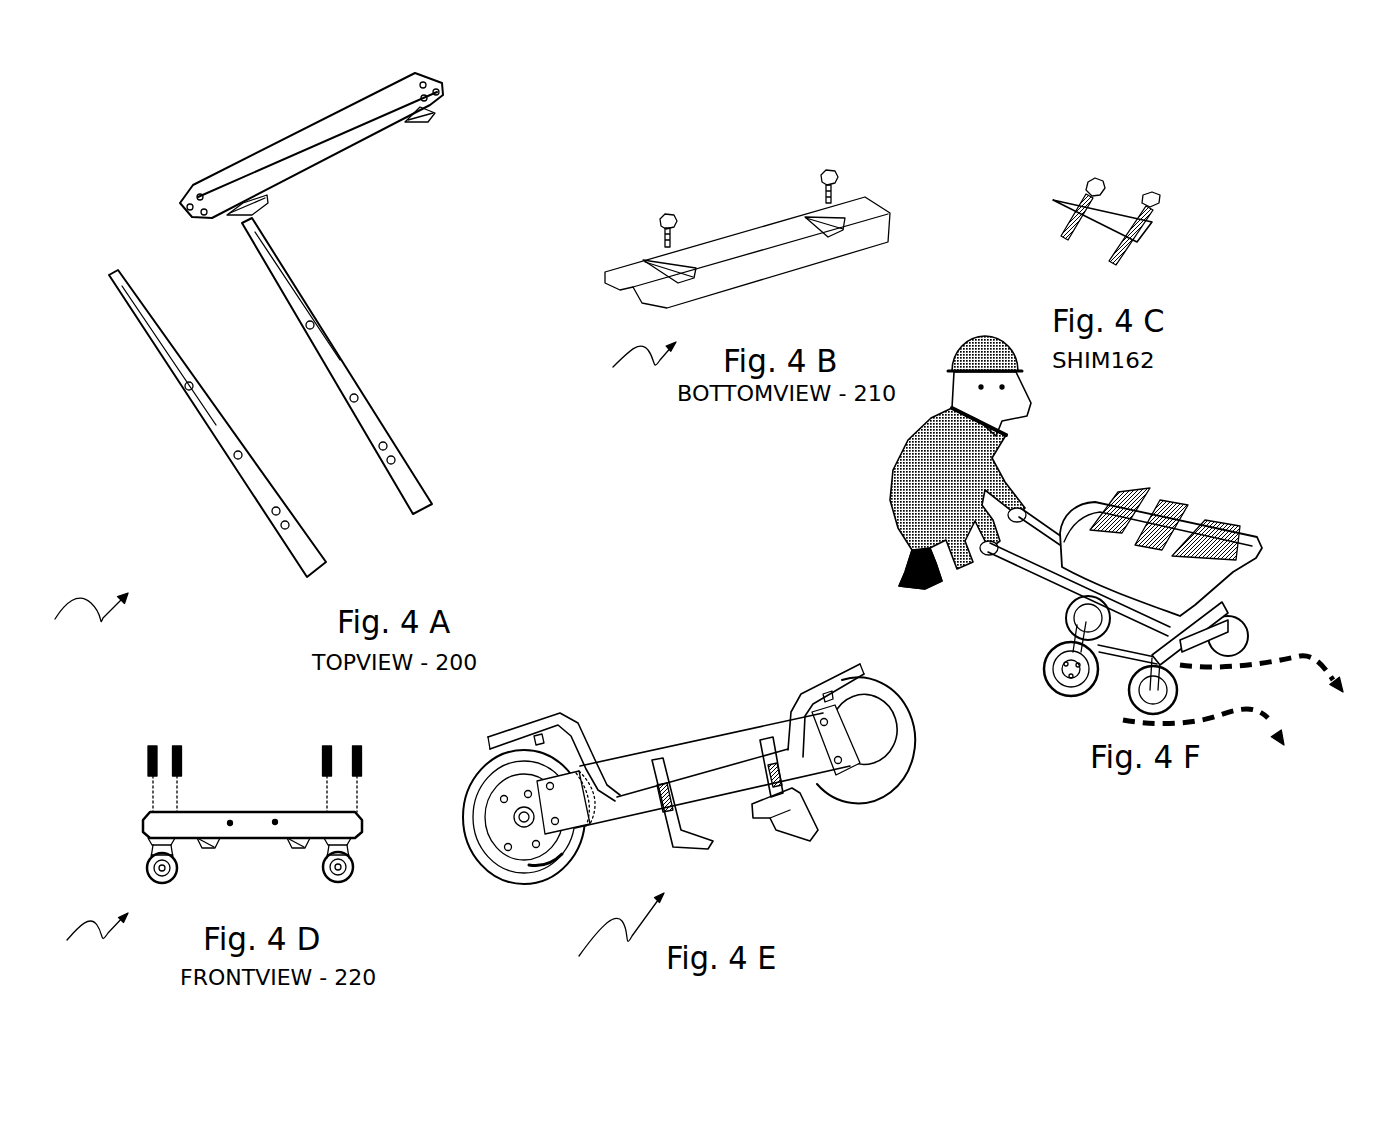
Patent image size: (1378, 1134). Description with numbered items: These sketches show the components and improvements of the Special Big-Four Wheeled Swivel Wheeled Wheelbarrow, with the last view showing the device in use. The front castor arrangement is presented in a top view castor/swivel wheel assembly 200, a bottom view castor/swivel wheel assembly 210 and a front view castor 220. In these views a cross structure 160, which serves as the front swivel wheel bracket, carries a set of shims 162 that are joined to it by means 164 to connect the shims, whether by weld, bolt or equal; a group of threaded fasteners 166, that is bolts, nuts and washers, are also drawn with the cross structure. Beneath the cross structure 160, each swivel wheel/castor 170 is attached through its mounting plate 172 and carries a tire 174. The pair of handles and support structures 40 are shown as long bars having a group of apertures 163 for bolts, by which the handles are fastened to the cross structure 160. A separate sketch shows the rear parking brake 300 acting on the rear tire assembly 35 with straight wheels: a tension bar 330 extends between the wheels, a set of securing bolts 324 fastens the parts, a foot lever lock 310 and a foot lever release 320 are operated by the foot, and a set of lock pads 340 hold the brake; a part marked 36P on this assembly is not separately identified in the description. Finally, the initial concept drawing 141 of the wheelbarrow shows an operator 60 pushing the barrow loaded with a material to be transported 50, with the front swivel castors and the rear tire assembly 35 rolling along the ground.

In FIG. 4E, the rear tire assembly 35 is at (496, 887).
In FIG. 4E, the axle pipe 36P is at (712, 787).
In FIG. 4A, the handles and support structures 40 is at (205, 419).
In FIG. 4F, the material to be transported 50 is at (1188, 512).
In FIG. 4F, the operator 60 is at (905, 501).
In FIG. 4F, the initial concept drawing 141 is at (1068, 582).
In FIG. 4A, the cross structure 160 is at (287, 157).
In FIG. 4B, the cross structure 160 is at (728, 247).
In FIG. 4D, the cross structure 160 is at (217, 808).
In FIG. 4A, the shims 162 is at (247, 205).
In FIG. 4B, the shims 162 is at (837, 230).
In FIG. 4C, the shims 162 is at (1065, 258).
In FIG. 4D, the shims 162 is at (217, 847).
In FIG. 4A, the apertures 163 is at (353, 388).
In FIG. 4A, the means to connect shims 164 is at (430, 110).
In FIG. 4B, the means to connect shims 164 is at (823, 205).
In FIG. 4B, the fastener screw 166 is at (840, 176).
In FIG. 4C, the fastener screw 166 is at (1160, 193).
In FIG. 4D, the fastener screw 166 is at (362, 753).
In FIG. 4D, the swivel wheel/castor 170 is at (148, 852).
In FIG. 4D, the mounting plate 172 is at (147, 838).
In FIG. 4D, the tire 174 is at (147, 872).
In FIG. 4A, the top view castor/swivel wheel assembly 200 is at (85, 623).
In FIG. 4B, the bottom view castor/swivel wheel assembly 210 is at (633, 374).
In FIG. 4D, the front view castor 220 is at (87, 942).
In FIG. 4E, the rear parking brake 300 is at (614, 940).
In FIG. 4E, the foot lever lock 310 is at (783, 813).
In FIG. 4E, the foot lever release 320 is at (701, 848).
In FIG. 4E, the securing bolts 324 is at (833, 702).
In FIG. 4E, the tension bar 330 is at (793, 705).
In FIG. 4E, the lock pads 340 is at (532, 719).